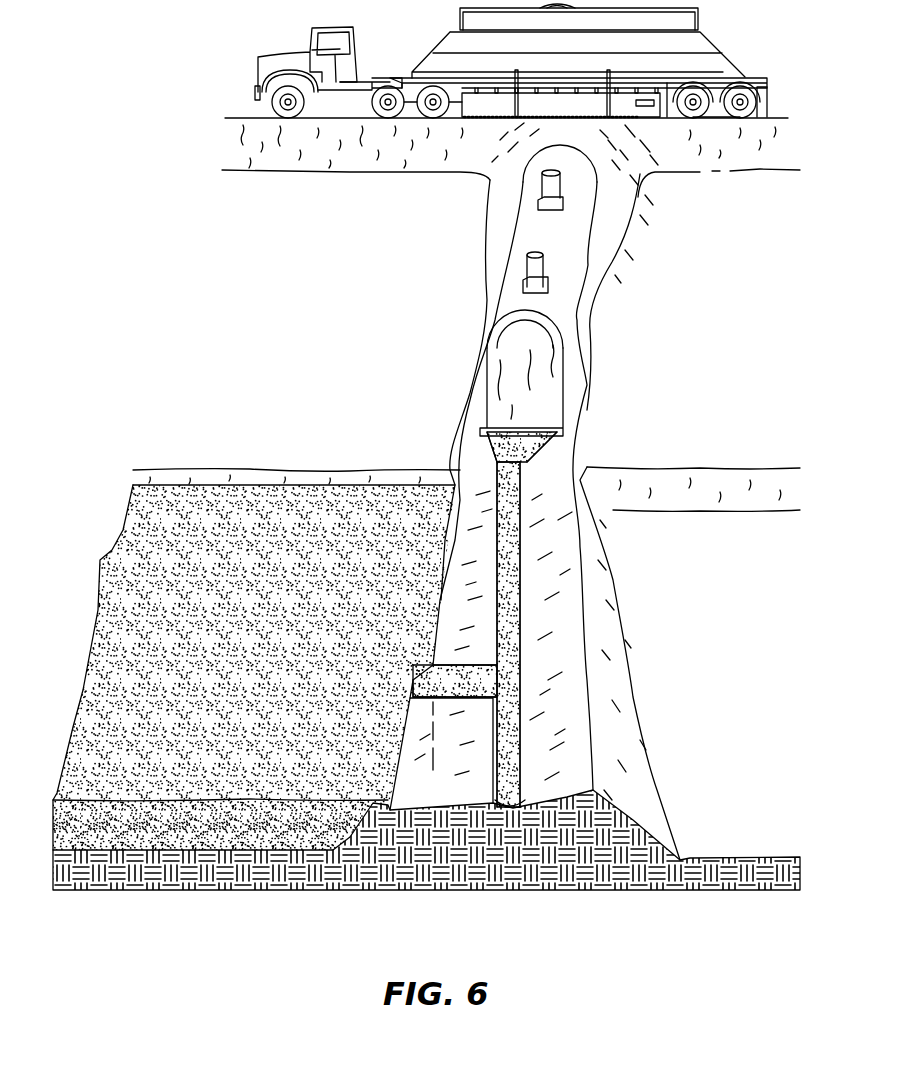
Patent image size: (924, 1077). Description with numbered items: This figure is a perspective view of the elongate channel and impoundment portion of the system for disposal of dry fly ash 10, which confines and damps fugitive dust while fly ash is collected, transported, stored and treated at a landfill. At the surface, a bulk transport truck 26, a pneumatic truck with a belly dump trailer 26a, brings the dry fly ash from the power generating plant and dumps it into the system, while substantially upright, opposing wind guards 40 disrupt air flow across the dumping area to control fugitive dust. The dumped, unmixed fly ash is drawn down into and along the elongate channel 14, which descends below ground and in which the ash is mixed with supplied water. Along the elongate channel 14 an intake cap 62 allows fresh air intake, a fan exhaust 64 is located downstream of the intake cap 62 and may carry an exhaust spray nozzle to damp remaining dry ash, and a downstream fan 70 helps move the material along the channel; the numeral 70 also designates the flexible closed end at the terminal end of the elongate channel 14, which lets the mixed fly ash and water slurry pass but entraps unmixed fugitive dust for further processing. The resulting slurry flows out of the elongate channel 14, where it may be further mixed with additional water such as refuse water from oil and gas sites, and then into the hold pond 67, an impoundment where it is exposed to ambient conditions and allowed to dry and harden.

The system for disposal of dry fly ash 10 is at (140, 43).
The bulk transport truck 26 is at (282, 60).
The belly dump trailer 26a is at (683, 23).
The wind guards 40 is at (645, 103).
The elongate channel 14 is at (560, 252).
The intake cap 62 is at (543, 188).
The fan exhaust 64 is at (535, 267).
The downstream fan 70 is at (520, 363).
The hold pond 67 is at (253, 518).